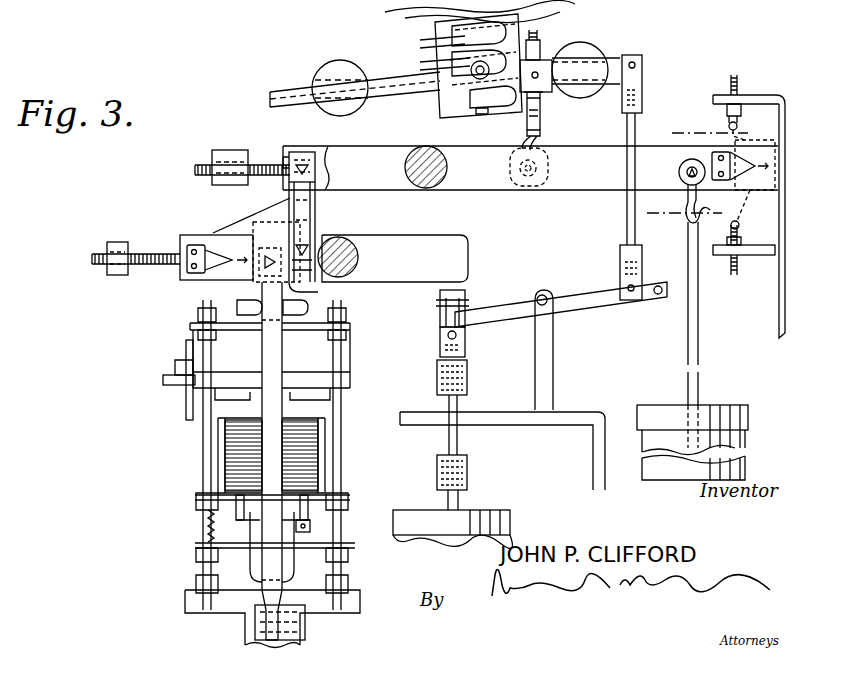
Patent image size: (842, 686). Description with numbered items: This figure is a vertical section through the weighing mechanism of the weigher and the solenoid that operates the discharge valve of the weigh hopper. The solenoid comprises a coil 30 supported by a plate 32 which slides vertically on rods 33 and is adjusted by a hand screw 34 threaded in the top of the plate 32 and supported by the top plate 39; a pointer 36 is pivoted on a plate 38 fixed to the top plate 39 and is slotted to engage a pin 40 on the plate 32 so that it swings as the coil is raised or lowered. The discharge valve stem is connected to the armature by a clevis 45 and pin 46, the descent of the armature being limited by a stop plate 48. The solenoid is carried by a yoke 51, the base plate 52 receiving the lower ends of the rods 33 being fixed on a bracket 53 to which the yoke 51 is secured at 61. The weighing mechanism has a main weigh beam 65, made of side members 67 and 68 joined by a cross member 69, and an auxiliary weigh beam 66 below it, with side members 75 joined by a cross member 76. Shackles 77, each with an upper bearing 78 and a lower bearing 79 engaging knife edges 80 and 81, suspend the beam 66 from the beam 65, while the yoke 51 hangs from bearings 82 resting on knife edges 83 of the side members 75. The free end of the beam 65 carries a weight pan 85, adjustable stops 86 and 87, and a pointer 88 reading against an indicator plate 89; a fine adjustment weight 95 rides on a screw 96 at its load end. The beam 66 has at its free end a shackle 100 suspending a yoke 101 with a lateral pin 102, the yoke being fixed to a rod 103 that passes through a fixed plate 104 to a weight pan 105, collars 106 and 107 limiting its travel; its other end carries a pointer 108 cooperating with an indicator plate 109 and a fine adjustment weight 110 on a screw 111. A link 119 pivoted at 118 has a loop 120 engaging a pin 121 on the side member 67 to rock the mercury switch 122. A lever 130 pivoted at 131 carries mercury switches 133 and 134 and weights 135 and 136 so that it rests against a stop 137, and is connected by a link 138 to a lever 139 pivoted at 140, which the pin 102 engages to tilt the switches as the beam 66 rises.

The coil 30 is at (320, 460).
The plate 32 is at (350, 380).
The vertical rods 33 is at (218, 468).
The hand screw 34 is at (250, 305).
The indicating arm or pointer 36 is at (175, 368).
The plate 38 is at (186, 410).
The top plate 39 is at (232, 332).
The pin 40 is at (163, 381).
The clevis 45 is at (250, 568).
The pin 46 is at (306, 535).
The stop plate 48 is at (212, 530).
The yoke 51 is at (258, 406).
The base plate 52 is at (190, 590).
The bracket 53 is at (205, 612).
The bolt 61 is at (305, 625).
The main weigh beam 65 is at (582, 140).
The auxiliary weigh beam 66 is at (385, 282).
The side member 67 is at (696, 167).
The side member 68 is at (328, 152).
The cross member 69 is at (448, 188).
The side members 75 is at (183, 268).
The cross member 76 is at (352, 250).
The shackles 77 is at (310, 240).
The bearing 78 is at (300, 158).
The bearing 79 is at (310, 280).
The knife edge 80 is at (290, 188).
The knife edge 81 is at (312, 250).
The bearings 82 is at (255, 224).
The knife edges 83 is at (268, 264).
The weight pan 85 is at (745, 440).
The adjustable stop 86 is at (728, 120).
The adjustable stop 87 is at (733, 270).
The pointer 88 is at (750, 160).
The indicator plate 89 is at (740, 226).
The fine adjustment weight 95 is at (226, 155).
The screw 96 is at (260, 163).
The shackle 100 is at (466, 305).
The yoke 101 is at (466, 348).
The pin 102 is at (446, 337).
The rod 103 is at (458, 404).
The plate 104 is at (508, 427).
The weight pan 105 is at (510, 525).
The collar 106 is at (437, 392).
The collar 107 is at (438, 462).
The pointer 108 is at (218, 242).
The indicator plate 109 is at (230, 270).
The fine adjustment weight 110 is at (114, 240).
The screw 111 is at (148, 253).
The pivotal connection 118 is at (548, 95).
The link 119 is at (527, 120).
The loop 120 is at (511, 162).
The pin 121 is at (548, 165).
The mercury switch 122 is at (455, 26).
The lever 130 is at (395, 79).
The pivot 131 is at (445, 98).
The mercury switch 133 is at (440, 52).
The mercury switch 134 is at (452, 104).
The weight 135 is at (333, 70).
The weight 136 is at (595, 50).
The adjustable stop 137 is at (546, 30).
The link 138 is at (627, 200).
The lever 139 is at (590, 306).
The pivot 140 is at (545, 292).